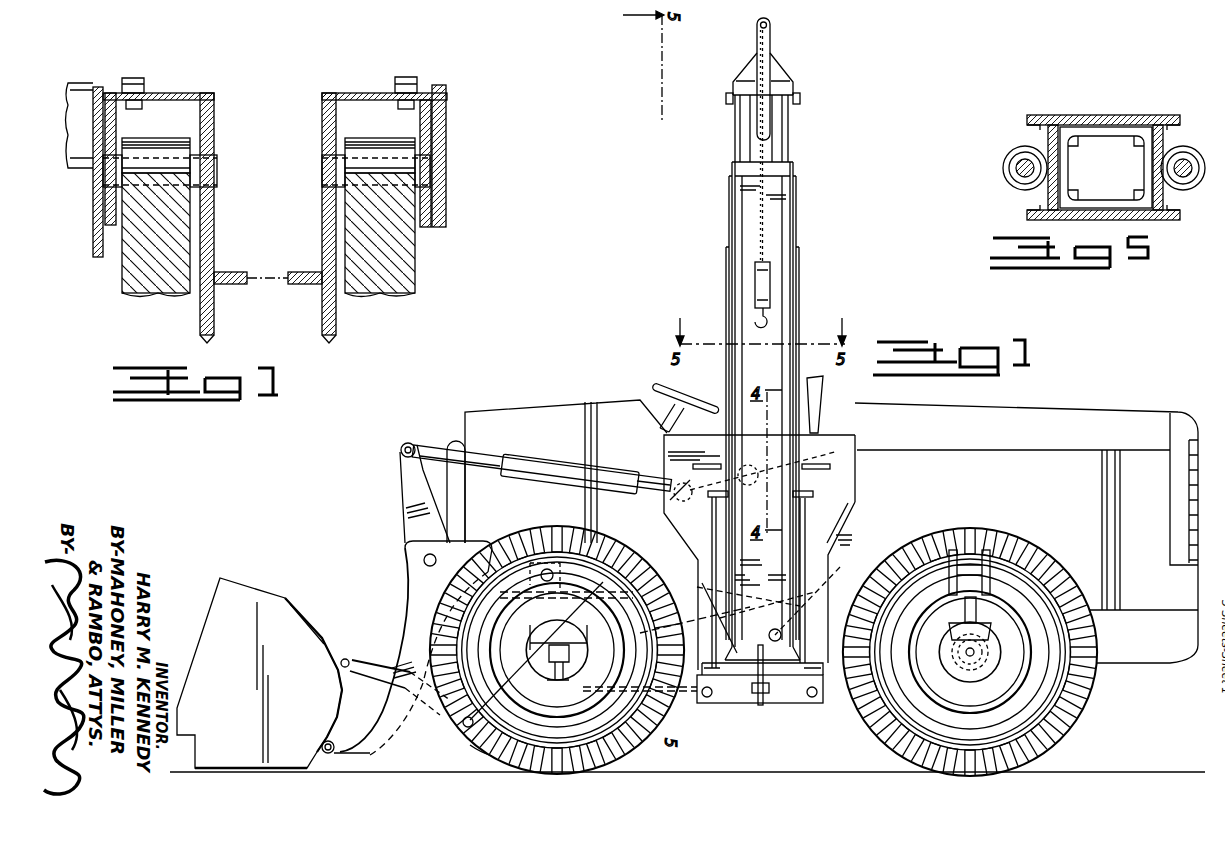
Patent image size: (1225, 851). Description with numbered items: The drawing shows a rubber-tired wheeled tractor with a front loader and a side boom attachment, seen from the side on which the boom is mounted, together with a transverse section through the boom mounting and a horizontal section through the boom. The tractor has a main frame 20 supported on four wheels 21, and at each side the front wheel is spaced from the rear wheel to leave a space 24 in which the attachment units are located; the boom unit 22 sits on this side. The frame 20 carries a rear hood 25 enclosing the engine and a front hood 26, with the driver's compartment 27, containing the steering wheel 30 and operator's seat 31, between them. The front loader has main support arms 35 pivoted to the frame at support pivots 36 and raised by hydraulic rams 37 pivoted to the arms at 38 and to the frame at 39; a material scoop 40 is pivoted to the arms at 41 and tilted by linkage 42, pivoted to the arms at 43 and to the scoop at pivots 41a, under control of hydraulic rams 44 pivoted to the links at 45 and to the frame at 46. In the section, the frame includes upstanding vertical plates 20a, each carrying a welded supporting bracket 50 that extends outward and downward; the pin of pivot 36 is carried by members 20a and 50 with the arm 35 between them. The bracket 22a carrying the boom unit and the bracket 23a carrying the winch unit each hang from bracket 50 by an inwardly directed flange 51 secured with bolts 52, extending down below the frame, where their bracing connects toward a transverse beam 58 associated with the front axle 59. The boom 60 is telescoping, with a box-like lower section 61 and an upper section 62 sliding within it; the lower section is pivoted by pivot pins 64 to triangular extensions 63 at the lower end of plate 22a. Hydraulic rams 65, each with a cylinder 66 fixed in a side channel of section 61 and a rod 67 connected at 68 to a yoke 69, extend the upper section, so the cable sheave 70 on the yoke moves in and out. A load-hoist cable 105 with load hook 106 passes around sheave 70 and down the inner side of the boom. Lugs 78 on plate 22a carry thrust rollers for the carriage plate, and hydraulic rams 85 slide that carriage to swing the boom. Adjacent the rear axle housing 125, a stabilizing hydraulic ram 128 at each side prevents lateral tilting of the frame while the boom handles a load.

In FIG. 1, the main frame 20 is at (1135, 664).
In FIG. 4, the upstanding vertical plates 20a is at (298, 117).
In FIG. 1, the wheels 21 is at (640, 755).
In FIG. 1, the boom unit 22 is at (855, 427).
In FIG. 1, the bracket 22a is at (850, 497).
In FIG. 4, the bracket 22a is at (90, 243).
In FIG. 4, the bracket 23a is at (447, 212).
In FIG. 1, the space 24 is at (832, 665).
In FIG. 1, the rear housing or hood 25 is at (1093, 405).
In FIG. 1, the hood or housing 26 is at (473, 412).
In FIG. 1, the driver's compartment 27 is at (670, 423).
In FIG. 1, the steering wheel 30 is at (666, 383).
In FIG. 1, the operator's seat 31 is at (822, 390).
In FIG. 1, the main support arms 35 is at (403, 600).
In FIG. 4, the main support arms 35 is at (188, 218).
In FIG. 1, the support pivots 36 is at (797, 483).
In FIG. 4, the support pivots 36 is at (197, 157).
In FIG. 1, the hydraulic rams 37 is at (700, 585).
In FIG. 1, the pivot 38 is at (540, 563).
In FIG. 1, the pivot 39 is at (826, 580).
In FIG. 1, the material scoop 40 is at (222, 578).
In FIG. 1, the pivot 41 is at (370, 753).
In FIG. 1, the pivots 41a is at (344, 658).
In FIG. 1, the linkage 42 is at (403, 500).
In FIG. 1, the pivot 43 is at (424, 560).
In FIG. 1, the hydraulic rams 44 is at (505, 457).
In FIG. 1, the pivot 45 is at (404, 444).
In FIG. 1, the pivot 46 is at (675, 500).
In FIG. 1, the supporting bracket 50 is at (832, 488).
In FIG. 4, the supporting bracket 50 is at (195, 93).
In FIG. 4, the inwardly directed flange 51 is at (158, 76).
In FIG. 4, the bolts 52 is at (130, 76).
In FIG. 1, the transverse beam or support 58 is at (480, 748).
In FIG. 1, the front axle 59 is at (464, 727).
In FIG. 1, the boom 60 is at (733, 212).
In FIG. 5, the boom 60 is at (1085, 116).
In FIG. 1, the lower section 61 is at (742, 290).
In FIG. 5, the lower section 61 is at (1040, 219).
In FIG. 1, the upper section 62 is at (745, 132).
In FIG. 5, the upper section 62 is at (1146, 172).
In FIG. 1, the triangular extensions 63 is at (705, 698).
In FIG. 1, the pivot pins 64 is at (756, 690).
In FIG. 1, the hydraulic rams 65 is at (727, 258).
In FIG. 5, the hydraulic rams 65 is at (1003, 151).
In FIG. 5, the cylinder 66 is at (1006, 168).
In FIG. 5, the rod 67 is at (1012, 176).
In FIG. 1, the connection 68 is at (726, 98).
In FIG. 1, the yoke 69 is at (735, 70).
In FIG. 1, the cable sheave 70 is at (757, 36).
In FIG. 4, the outwardly projecting lugs 78 is at (78, 170).
In FIG. 1, the hydraulic rams 85 is at (817, 554).
In FIG. 1, the load-hoist cable 105 is at (768, 183).
In FIG. 1, the load hook 106 is at (757, 322).
In FIG. 1, the axle housing 125 is at (985, 662).
In FIG. 1, the hydraulic ram 128 is at (989, 575).